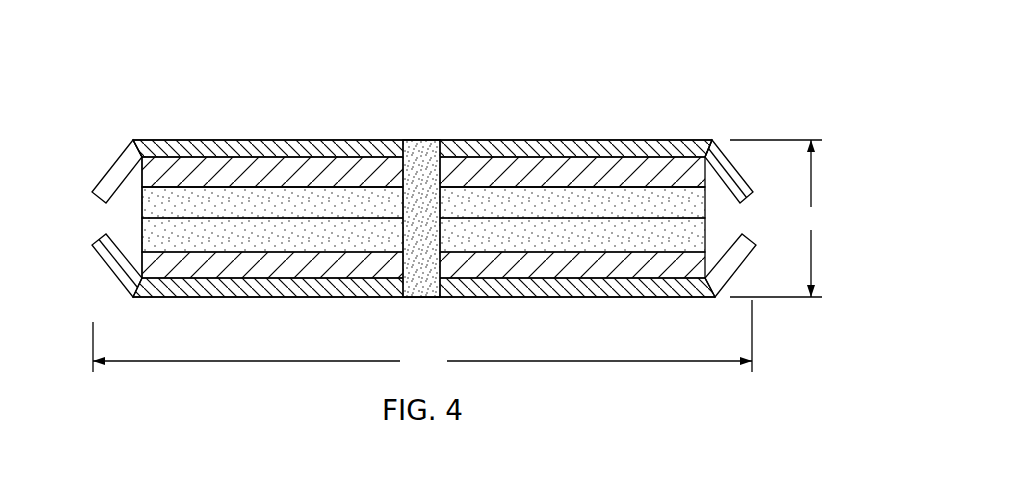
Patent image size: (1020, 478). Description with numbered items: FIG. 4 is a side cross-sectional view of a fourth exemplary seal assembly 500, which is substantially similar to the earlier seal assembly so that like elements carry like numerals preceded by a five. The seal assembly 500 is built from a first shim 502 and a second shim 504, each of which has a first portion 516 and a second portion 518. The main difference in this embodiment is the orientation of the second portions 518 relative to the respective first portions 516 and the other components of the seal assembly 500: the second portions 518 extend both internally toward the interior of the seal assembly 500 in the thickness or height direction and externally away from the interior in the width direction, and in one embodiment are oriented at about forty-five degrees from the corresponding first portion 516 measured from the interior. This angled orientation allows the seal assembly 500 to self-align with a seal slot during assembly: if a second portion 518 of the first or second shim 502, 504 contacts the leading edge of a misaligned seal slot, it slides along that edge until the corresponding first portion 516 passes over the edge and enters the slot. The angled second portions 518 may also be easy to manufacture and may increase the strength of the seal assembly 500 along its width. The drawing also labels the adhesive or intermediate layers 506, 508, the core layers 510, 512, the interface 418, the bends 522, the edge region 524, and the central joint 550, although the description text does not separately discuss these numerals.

The seal assembly 500 is at (630, 50).
The first shim 502 is at (348, 150).
The second shim 504 is at (347, 290).
The first adhesive layer 506 is at (284, 168).
The second adhesive layer 508 is at (286, 268).
The first core layer 510 is at (234, 202).
The second core layer 512 is at (228, 236).
The core interface 418 is at (150, 186).
The first portion 516 is at (571, 150).
The second portion 518 is at (102, 172).
The bend 522 is at (134, 139).
The edge 524 is at (118, 214).
The splice joint 550 is at (424, 162).